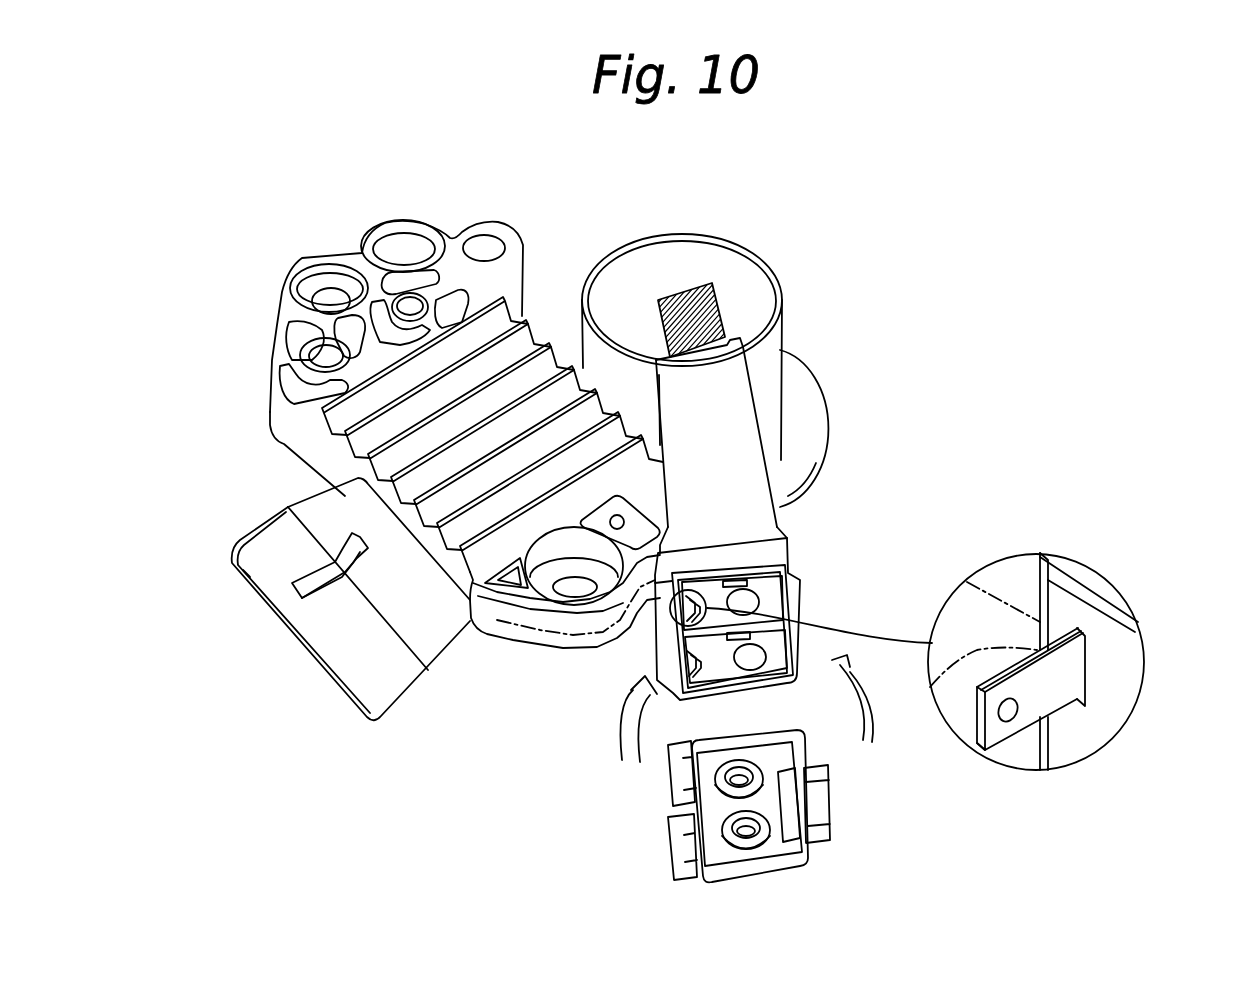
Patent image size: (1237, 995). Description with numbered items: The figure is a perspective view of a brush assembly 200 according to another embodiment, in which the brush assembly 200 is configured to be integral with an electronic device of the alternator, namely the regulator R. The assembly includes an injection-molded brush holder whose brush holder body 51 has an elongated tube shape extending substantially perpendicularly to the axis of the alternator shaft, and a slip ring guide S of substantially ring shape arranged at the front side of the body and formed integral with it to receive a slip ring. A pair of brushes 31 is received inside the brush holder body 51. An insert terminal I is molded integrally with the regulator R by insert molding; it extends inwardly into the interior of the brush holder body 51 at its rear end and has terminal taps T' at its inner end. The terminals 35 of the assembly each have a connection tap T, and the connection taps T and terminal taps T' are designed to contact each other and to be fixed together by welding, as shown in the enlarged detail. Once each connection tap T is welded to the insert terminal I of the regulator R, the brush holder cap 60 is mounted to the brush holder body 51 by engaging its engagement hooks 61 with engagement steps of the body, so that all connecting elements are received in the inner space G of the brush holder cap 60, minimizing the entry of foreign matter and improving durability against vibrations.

The brush assembly 200 is at (846, 294).
The brushes 31 is at (682, 298).
The slip ring guide S is at (690, 232).
The brush holder body 51 is at (763, 468).
The terminals 35 is at (770, 593).
The regulator R is at (480, 523).
The insert terminal I is at (540, 620).
The brush holder cap 60 is at (800, 847).
The engagement hooks 61 is at (675, 757).
The inner space G is at (715, 812).
The connection taps T is at (1030, 736).
The terminal taps T' is at (935, 739).